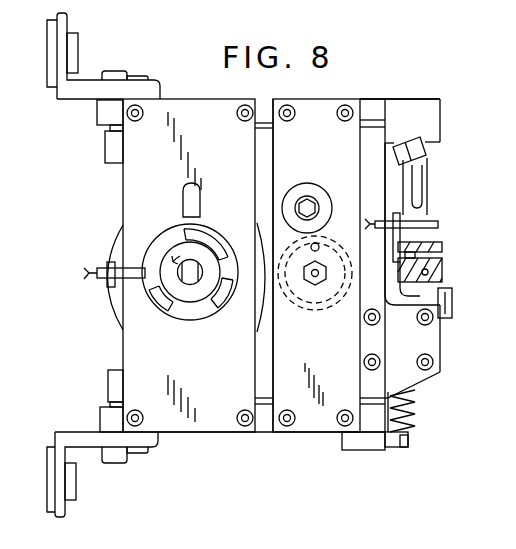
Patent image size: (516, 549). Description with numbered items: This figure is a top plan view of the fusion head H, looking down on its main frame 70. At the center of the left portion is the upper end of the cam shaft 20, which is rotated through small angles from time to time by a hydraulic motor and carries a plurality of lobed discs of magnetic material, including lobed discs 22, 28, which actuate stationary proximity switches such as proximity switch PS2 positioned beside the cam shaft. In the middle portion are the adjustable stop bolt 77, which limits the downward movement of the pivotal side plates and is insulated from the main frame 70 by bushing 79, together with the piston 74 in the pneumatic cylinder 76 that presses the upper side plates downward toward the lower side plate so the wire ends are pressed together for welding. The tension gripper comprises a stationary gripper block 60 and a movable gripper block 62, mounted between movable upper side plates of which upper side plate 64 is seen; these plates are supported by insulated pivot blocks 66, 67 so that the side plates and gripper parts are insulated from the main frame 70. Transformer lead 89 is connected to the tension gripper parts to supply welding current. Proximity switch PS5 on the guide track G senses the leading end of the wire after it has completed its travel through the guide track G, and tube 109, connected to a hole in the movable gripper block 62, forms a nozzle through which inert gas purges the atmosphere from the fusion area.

The main frame 70 is at (97, 112).
The insulated pivot block 67 is at (105, 150).
The insulated pivot block 66 is at (108, 380).
The proximity switch PS2 is at (121, 283).
The lobed disc 28 is at (152, 306).
The cam shaft 20 is at (189, 283).
The lobed disc 22 is at (208, 303).
The bushing 79 is at (306, 184).
The adjustable stop bolt 77 is at (317, 206).
The piston 74 is at (310, 308).
The pneumatic cylinder 76 is at (334, 308).
The fusion head H is at (380, 99).
The transformer lead 89 is at (405, 150).
The movable gripper block 62 is at (430, 152).
The tube 109 is at (430, 184).
The proximity switch PS5 is at (432, 222).
The guide track G is at (443, 256).
The stationary gripper block 60 is at (452, 300).
The upper side plate 64 is at (440, 372).